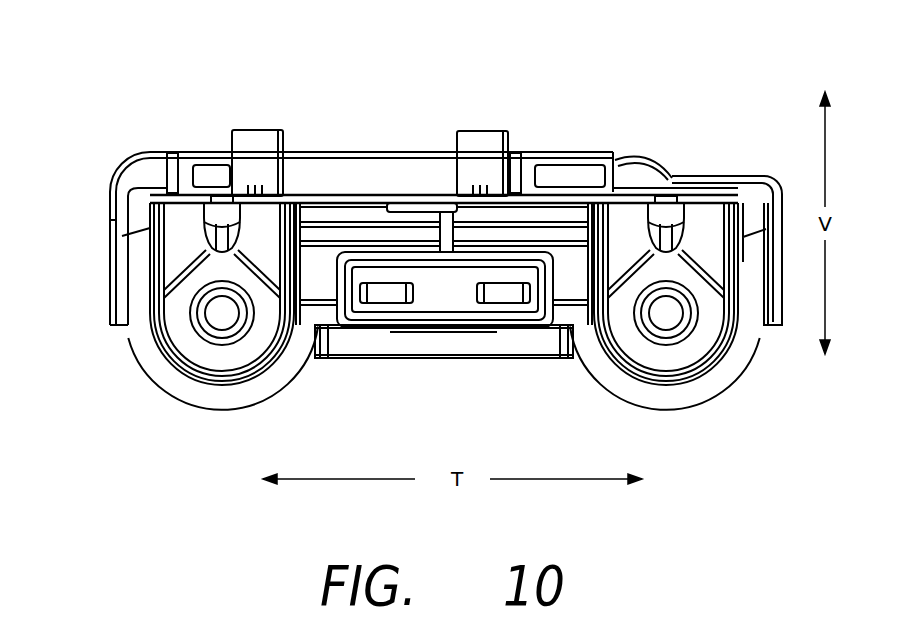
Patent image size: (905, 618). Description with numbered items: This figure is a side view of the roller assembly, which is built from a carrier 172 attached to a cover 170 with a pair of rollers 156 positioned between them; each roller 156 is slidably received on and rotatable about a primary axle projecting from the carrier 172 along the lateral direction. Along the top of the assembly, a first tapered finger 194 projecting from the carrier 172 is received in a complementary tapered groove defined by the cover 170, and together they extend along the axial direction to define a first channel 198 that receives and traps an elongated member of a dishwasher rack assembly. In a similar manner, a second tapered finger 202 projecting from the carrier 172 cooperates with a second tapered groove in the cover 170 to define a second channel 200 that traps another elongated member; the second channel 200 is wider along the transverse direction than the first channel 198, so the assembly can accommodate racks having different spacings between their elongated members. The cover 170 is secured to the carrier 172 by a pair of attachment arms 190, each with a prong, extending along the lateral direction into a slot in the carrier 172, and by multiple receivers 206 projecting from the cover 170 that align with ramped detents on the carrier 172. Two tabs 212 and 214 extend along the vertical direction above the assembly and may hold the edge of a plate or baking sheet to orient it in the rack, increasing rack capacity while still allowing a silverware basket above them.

The roller 156 is at (247, 393).
The cover 170 is at (328, 152).
The carrier 172 is at (185, 338).
The attachment arm 190 is at (383, 295).
The first tapered finger 194 is at (190, 160).
The first channel 198 is at (215, 165).
The second channel 200 is at (578, 168).
The second tapered finger 202 is at (523, 165).
The receiver 206 is at (152, 176).
The tab 212 is at (258, 130).
The tab 214 is at (487, 130).